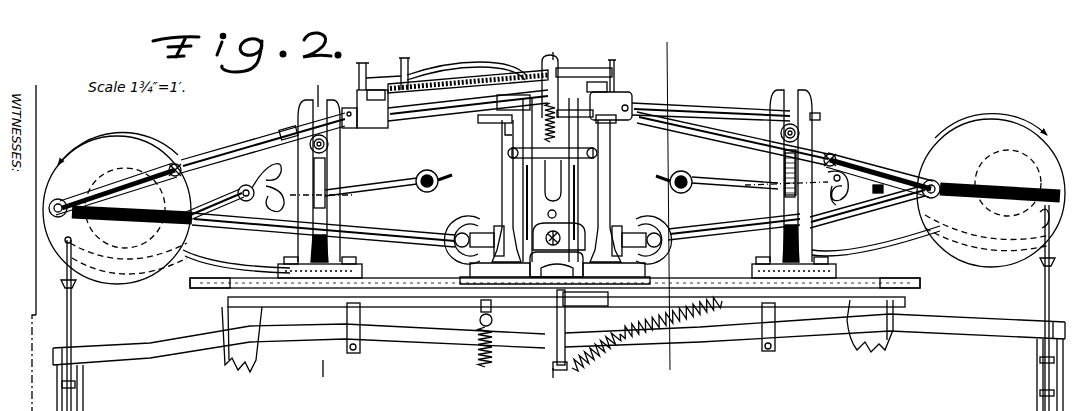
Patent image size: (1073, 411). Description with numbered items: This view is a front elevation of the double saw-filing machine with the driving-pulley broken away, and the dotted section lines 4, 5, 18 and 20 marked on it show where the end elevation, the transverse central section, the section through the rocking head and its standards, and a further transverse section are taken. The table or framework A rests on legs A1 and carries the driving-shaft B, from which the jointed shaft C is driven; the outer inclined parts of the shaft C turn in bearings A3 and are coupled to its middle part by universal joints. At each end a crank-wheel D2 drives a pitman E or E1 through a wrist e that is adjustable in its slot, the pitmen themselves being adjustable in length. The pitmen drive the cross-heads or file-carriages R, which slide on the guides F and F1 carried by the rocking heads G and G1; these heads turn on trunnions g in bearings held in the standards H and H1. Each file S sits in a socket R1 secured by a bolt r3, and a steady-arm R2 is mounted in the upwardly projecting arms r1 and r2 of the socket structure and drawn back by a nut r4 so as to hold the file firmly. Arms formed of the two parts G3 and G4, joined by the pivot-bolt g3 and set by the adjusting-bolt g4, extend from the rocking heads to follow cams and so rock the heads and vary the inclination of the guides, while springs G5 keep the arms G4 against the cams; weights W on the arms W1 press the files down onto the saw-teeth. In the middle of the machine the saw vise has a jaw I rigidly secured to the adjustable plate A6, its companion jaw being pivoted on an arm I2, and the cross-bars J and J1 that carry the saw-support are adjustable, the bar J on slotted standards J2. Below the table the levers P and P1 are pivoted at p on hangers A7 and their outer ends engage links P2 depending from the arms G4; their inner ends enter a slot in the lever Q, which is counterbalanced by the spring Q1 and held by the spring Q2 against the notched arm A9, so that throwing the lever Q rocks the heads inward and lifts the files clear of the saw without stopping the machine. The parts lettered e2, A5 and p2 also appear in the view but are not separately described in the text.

The dotted line 4 4 is at (52, 85).
The dotted line 18 18 is at (332, 85).
The dotted line 5 5 is at (575, 52).
The dotted line 20 20 is at (690, 42).
The crank-wheel D2 is at (943, 150).
The wrist e is at (60, 199).
The crank pin e2 is at (172, 165).
The pitman E1 is at (222, 148).
The pitman E is at (902, 150).
The guide F1 is at (287, 128).
The guide F is at (713, 111).
The standard H1 is at (338, 212).
The standard H is at (803, 94).
The trunnion g is at (330, 144).
The rocking head G1 is at (322, 177).
The arm part G3 is at (551, 233).
The pivot-bolt g3 is at (543, 188).
The adjusting-bolt g4 is at (557, 197).
The arm part G4 is at (211, 205).
The spring G5 is at (221, 257).
The rocking head G is at (786, 160).
The weight W is at (680, 172).
The arm W1 is at (442, 177).
The jointed shaft C is at (393, 236).
The cross-bar J1 is at (467, 260).
The cross-bar J is at (585, 163).
The standard J2 is at (515, 184).
The jaw I is at (574, 200).
The arm I2 is at (515, 172).
The driving-shaft B is at (555, 253).
The file-carriage R is at (370, 124).
The arm r1 is at (491, 69).
The arm r2 is at (404, 66).
The screw r3 is at (367, 96).
The nut r4 is at (361, 82).
The socket R1 is at (407, 91).
The steady-arm R2 is at (440, 66).
The file S is at (494, 98).
The table A is at (408, 295).
The leg A1 is at (256, 360).
The bearing A3 is at (192, 287).
The frame end A5 is at (925, 282).
The adjustable plate A6 is at (623, 284).
The hanger A7 is at (360, 322).
The arm A9 is at (570, 368).
The pivot p is at (358, 346).
The lever Q is at (478, 318).
The spring Q1 is at (494, 358).
The spring Q2 is at (623, 341).
The lever P1 is at (160, 345).
The lever P is at (965, 324).
The link P2 is at (72, 310).
The nut p2 is at (72, 403).